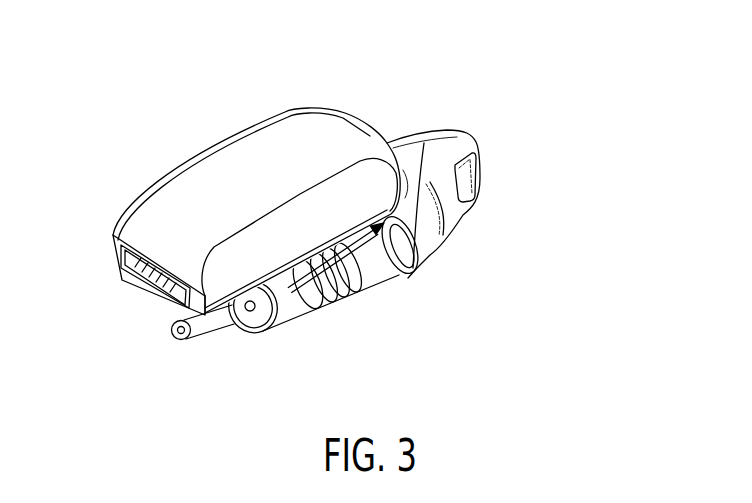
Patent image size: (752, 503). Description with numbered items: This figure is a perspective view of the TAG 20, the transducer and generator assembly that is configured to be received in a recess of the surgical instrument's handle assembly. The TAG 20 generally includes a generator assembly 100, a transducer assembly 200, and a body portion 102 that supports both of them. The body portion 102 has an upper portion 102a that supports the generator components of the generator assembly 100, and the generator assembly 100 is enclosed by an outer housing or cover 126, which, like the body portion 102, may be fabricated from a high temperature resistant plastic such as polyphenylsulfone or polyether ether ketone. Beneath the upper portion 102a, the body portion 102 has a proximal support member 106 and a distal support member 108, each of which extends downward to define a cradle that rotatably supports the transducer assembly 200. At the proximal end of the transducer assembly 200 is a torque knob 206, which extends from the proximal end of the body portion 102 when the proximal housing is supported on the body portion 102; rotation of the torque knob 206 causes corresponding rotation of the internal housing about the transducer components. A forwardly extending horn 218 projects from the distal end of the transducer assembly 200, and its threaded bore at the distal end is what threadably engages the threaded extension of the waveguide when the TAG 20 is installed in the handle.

The TAG 20 is at (202, 78).
The generator assembly 100 is at (355, 87).
The body portion 102 is at (381, 236).
The upper portion 102a is at (424, 143).
The proximal support member 106 is at (433, 229).
The distal support member 108 is at (296, 316).
The outer housing or cover 126 is at (140, 197).
The transducer assembly 200 is at (395, 319).
The torque knob 206 is at (472, 175).
The horn 218 is at (192, 345).